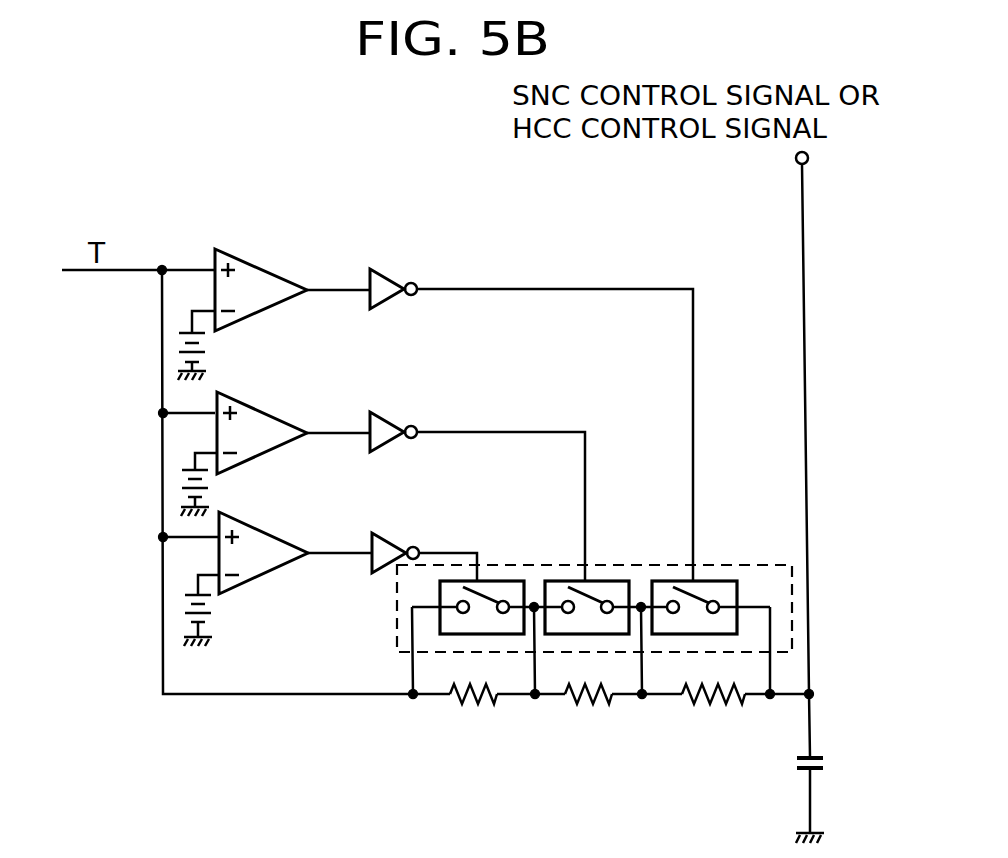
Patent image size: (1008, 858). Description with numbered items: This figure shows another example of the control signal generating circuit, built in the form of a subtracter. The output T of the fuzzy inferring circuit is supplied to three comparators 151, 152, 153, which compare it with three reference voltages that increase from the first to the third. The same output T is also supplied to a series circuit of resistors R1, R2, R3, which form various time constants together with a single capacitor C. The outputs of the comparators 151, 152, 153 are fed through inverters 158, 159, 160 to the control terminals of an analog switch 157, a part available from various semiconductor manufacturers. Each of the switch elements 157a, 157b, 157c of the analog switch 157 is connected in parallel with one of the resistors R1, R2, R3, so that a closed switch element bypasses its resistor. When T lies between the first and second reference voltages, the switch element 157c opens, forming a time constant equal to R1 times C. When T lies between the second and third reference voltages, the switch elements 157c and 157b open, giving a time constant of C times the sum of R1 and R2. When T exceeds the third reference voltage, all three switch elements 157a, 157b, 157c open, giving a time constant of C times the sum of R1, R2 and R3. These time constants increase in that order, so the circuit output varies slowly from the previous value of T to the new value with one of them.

The comparator 151 is at (273, 271).
The comparator 152 is at (280, 418).
The comparator 153 is at (284, 540).
The analog switch 157 is at (397, 621).
The switch element 157a is at (498, 579).
The switch element 157b is at (610, 579).
The switch element 157c is at (716, 579).
The inverter 158 is at (387, 273).
The inverter 159 is at (392, 417).
The inverter 160 is at (394, 536).
The resistor R1 is at (707, 702).
The resistor R2 is at (590, 706).
The resistor R3 is at (471, 706).
The capacitor C is at (828, 767).